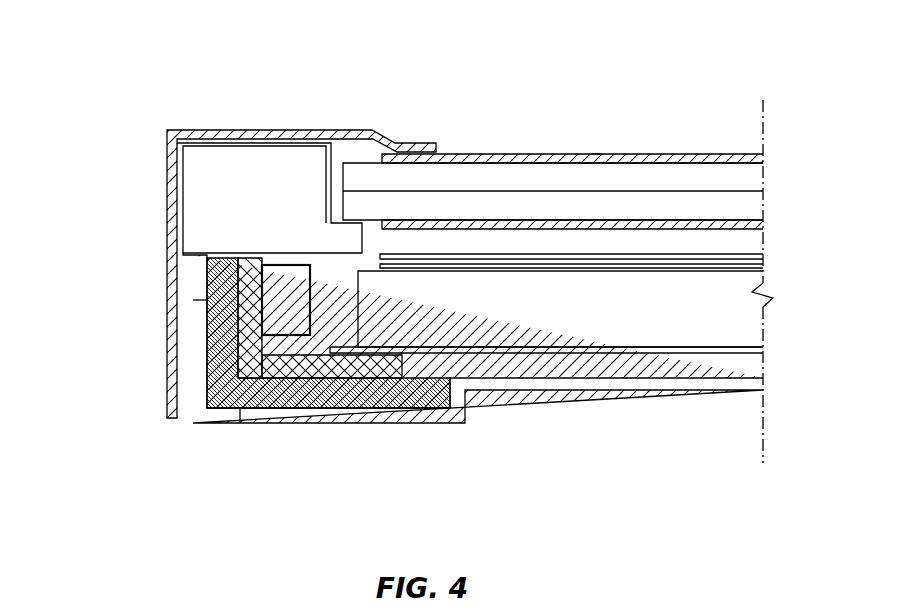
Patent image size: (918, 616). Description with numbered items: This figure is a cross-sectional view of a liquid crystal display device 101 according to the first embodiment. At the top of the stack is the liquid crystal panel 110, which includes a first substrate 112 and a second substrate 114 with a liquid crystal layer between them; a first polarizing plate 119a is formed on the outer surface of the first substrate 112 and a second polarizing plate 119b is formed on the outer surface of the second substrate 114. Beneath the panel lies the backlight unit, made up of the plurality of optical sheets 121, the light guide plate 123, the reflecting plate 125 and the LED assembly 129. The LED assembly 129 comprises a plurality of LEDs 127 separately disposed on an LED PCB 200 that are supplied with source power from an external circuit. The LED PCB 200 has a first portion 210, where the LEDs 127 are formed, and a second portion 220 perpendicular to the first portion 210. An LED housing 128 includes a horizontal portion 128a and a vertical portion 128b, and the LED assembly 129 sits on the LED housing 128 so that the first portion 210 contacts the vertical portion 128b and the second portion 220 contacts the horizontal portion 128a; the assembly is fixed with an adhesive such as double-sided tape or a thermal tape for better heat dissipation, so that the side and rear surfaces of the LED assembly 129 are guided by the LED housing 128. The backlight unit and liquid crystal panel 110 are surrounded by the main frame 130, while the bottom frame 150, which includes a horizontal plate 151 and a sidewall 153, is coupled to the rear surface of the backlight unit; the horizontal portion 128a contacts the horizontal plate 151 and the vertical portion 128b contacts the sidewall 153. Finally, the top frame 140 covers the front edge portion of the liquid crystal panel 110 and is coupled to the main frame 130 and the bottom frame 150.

The liquid crystal display device 101 is at (440, 23).
The top frame 140 is at (257, 135).
The main frame 130 is at (202, 201).
The liquid crystal panel 110 is at (490, 88).
The second substrate 114 is at (473, 177).
The first substrate 112 is at (517, 210).
The first polarizing plate 119a is at (645, 220).
The second polarizing plate 119b is at (592, 154).
The optical sheets 121 is at (763, 255).
The light guide plate 123 is at (750, 323).
The reflecting plate 125 is at (755, 348).
The LED housing 128 is at (50, 307).
The horizontal portion 128a is at (257, 397).
The vertical portion 128b is at (220, 303).
The LED assembly 129 is at (347, 523).
The LED PCB 200 is at (325, 497).
The first portion 210 is at (252, 313).
The second portion 220 is at (300, 299).
The LED 127 is at (337, 362).
The bottom frame 150 is at (178, 498).
The sidewall 153 is at (193, 389).
The horizontal plate 151 is at (250, 417).